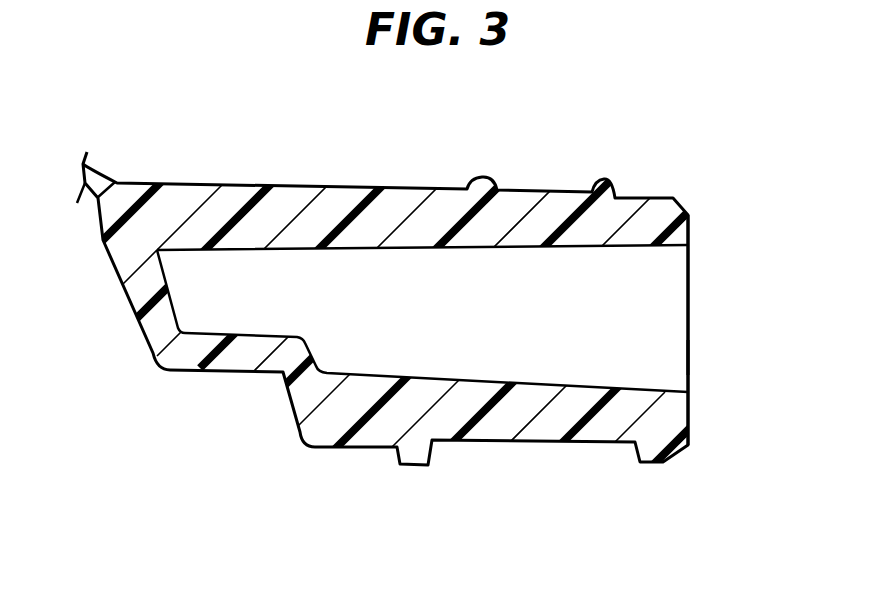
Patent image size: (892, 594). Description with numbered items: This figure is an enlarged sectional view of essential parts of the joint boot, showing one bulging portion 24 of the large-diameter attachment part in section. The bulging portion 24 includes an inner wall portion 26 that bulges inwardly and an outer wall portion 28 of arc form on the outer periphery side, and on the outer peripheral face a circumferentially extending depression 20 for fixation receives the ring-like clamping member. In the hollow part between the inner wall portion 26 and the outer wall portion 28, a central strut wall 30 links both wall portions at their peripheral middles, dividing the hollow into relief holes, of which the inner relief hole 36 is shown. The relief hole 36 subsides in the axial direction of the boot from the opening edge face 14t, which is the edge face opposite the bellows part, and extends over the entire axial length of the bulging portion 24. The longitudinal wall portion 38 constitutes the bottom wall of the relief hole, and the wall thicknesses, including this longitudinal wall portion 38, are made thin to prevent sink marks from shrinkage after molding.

The depression for fixation 20 is at (542, 443).
The bulging portion 24 is at (322, 463).
The inner wall portion 26 is at (653, 213).
The outer wall portion 28 is at (657, 418).
The central strut wall 30 is at (648, 328).
The opening edge face 14t is at (688, 357).
The relief hole 36 is at (507, 337).
The longitudinal wall portion 38 is at (127, 300).